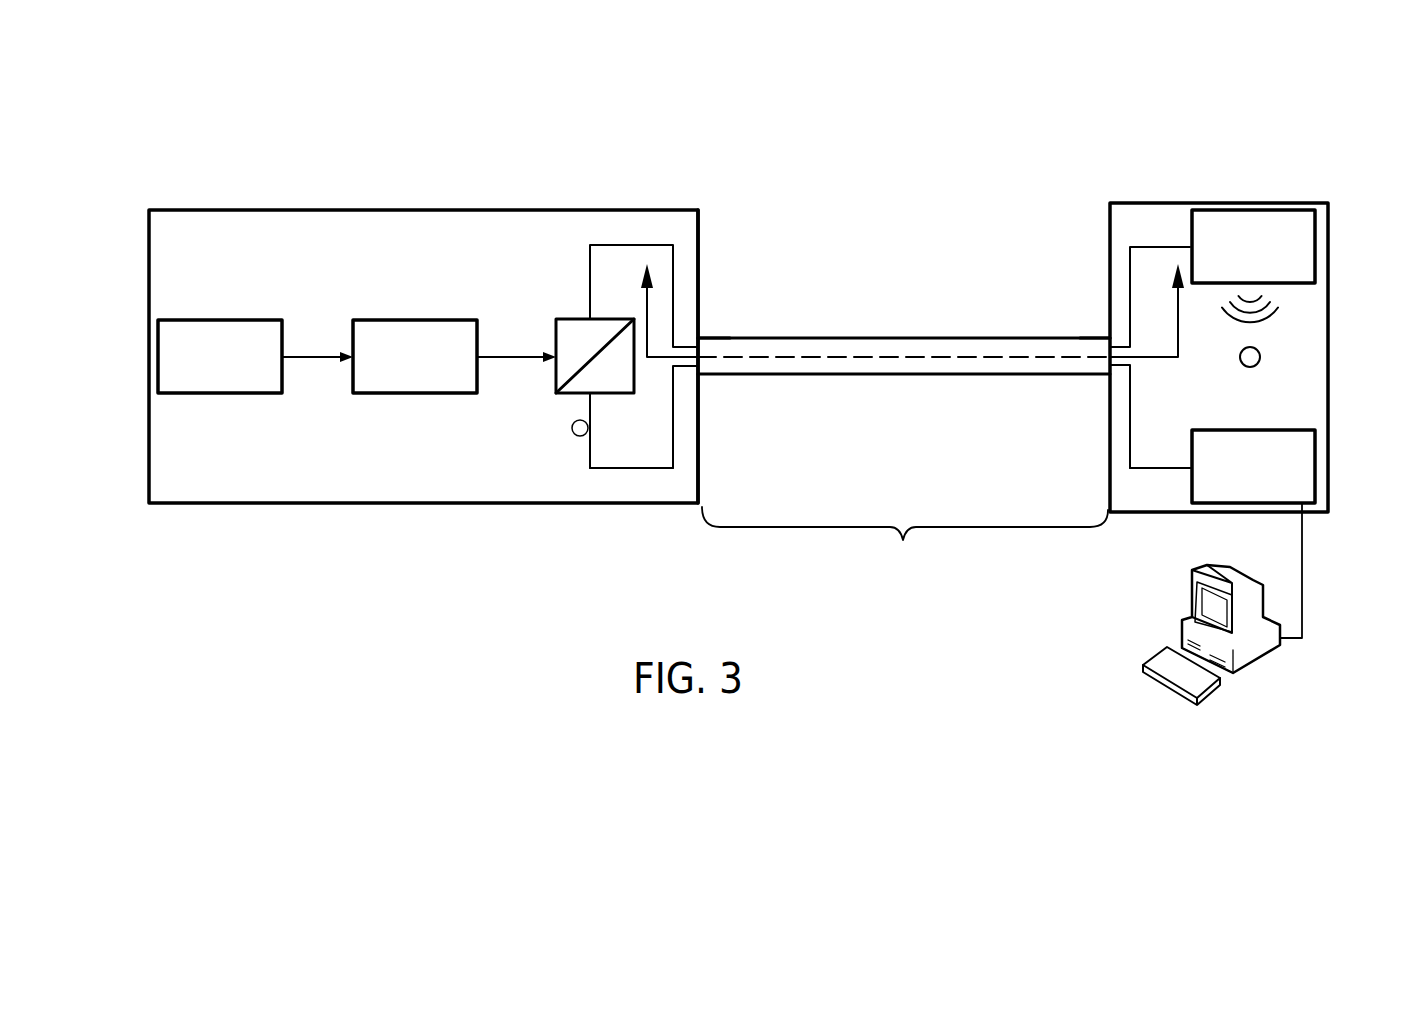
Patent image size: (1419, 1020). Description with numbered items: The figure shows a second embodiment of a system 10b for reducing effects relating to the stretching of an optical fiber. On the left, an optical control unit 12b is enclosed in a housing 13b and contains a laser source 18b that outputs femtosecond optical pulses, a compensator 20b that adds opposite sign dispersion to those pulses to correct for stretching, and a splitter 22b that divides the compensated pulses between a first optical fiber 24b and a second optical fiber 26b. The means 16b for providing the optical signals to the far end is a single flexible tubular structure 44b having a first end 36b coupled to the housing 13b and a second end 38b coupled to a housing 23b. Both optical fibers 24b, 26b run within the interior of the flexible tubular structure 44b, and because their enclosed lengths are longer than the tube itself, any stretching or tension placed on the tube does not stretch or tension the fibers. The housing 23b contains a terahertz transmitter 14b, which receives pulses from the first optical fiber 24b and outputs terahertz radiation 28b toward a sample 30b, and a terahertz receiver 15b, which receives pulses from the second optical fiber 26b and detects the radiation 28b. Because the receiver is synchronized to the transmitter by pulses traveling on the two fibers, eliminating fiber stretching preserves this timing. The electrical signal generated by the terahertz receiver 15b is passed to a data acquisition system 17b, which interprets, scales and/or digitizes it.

The system 10b is at (975, 99).
The optical control unit 12b is at (483, 210).
The housing 13b is at (700, 220).
The terahertz transmitter 14b is at (1300, 210).
The terahertz receiver 15b is at (1253, 430).
The means for providing optical signals 16b is at (905, 540).
The data acquisition system 17b is at (1253, 580).
The laser source 18b is at (190, 320).
The compensator 20b is at (383, 320).
The splitter 22b is at (555, 376).
The housing 23b is at (1108, 222).
The first optical fiber 24b is at (603, 245).
The second optical fiber 26b is at (625, 468).
The terahertz radiation 28b is at (1290, 312).
The sample 30b is at (1252, 367).
The first end 36b is at (712, 338).
The second end 38b is at (1107, 338).
The flexible tubular structure 44b is at (888, 338).